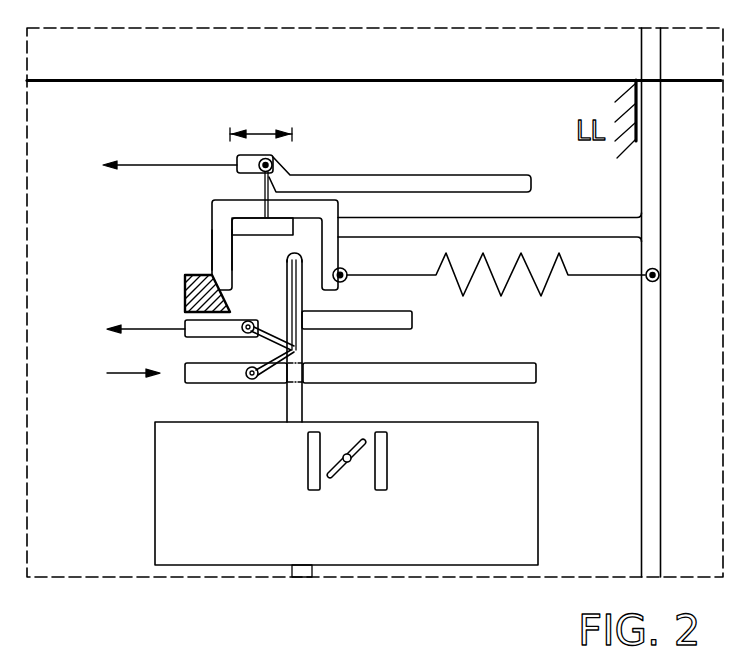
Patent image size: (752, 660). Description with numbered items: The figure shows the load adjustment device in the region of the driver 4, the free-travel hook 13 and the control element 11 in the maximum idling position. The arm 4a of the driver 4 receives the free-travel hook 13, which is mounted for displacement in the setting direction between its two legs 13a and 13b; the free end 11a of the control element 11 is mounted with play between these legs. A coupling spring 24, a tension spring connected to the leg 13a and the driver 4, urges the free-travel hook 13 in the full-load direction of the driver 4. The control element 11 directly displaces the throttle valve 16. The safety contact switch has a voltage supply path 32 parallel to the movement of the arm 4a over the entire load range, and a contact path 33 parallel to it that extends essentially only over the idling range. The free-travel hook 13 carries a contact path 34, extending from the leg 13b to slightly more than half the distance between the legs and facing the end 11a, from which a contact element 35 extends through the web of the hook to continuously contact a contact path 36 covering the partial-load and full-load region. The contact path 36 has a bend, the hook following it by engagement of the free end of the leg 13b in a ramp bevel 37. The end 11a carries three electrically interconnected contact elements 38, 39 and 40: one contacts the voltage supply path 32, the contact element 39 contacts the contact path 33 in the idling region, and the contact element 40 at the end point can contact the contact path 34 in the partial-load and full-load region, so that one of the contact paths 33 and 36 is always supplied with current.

The driver 4 is at (679, 350).
The arm of the driver 4a is at (568, 227).
The control element 11 is at (293, 407).
The free end of the control element 11a is at (322, 301).
The free-travel hook 13 is at (184, 217).
The leg of the free-travel hook 13a is at (345, 255).
The leg of the free-travel hook 13b is at (212, 240).
The throttle valve 16 is at (520, 476).
The coupling spring 24 is at (530, 283).
The voltage supply path 32 is at (458, 372).
The contact path 33 is at (202, 333).
The contact path 34 is at (248, 222).
The contact element 35 is at (273, 162).
The contact path 36 is at (424, 182).
The ramp bevel 37 is at (228, 302).
The contact element 38 is at (240, 381).
The contact element 39 is at (240, 335).
The contact element 40 is at (291, 253).